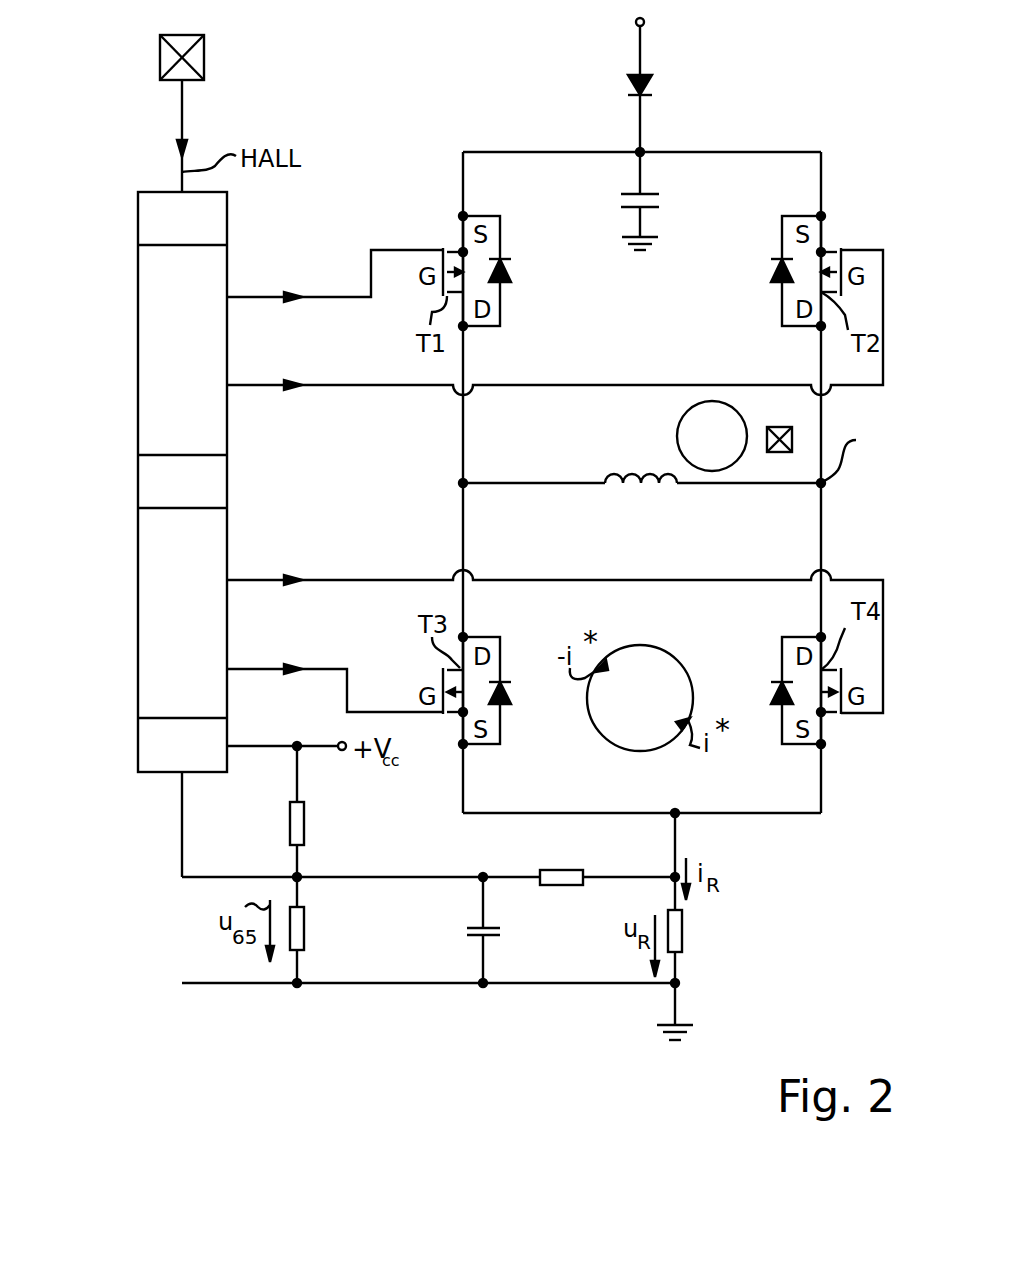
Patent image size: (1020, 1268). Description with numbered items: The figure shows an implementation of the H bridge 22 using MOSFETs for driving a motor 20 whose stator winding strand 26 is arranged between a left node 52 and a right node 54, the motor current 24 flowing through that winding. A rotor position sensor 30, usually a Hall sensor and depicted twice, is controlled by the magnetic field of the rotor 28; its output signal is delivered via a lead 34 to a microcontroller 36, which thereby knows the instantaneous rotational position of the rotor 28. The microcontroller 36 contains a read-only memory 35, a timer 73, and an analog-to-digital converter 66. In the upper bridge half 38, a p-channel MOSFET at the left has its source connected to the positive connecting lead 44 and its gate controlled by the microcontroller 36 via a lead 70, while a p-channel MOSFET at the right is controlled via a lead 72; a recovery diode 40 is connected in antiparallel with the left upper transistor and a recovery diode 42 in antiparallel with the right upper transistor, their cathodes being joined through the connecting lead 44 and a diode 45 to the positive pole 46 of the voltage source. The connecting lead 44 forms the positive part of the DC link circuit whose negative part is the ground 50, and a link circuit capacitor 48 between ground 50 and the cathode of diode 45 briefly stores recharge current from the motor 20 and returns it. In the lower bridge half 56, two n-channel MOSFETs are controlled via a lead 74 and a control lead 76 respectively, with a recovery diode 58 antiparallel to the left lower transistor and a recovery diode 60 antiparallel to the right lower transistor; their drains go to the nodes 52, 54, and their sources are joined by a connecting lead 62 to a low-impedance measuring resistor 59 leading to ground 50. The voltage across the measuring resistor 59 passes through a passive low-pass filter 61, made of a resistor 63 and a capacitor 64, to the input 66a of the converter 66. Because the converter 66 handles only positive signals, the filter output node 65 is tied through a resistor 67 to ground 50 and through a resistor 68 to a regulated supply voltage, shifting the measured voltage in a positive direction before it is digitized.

The motor 20 is at (552, 425).
The H bridge 22 is at (730, 140).
The motor current 24 is at (540, 473).
The stator winding strand 26 is at (616, 474).
The rotor 28 is at (684, 421).
The rotor position sensor 30 is at (204, 55).
The lead 34 is at (182, 122).
The ROM 35 is at (138, 217).
The microcontroller 36 is at (200, 393).
The upper bridge half 38 is at (603, 335).
The recovery diode 40 is at (512, 270).
The recovery diode 42 is at (778, 278).
The connecting lead 44 is at (517, 152).
The diode 45 is at (628, 82).
The positive pole 46 is at (636, 22).
The link circuit capacitor 48 is at (658, 205).
The ground 50 is at (668, 238).
The node 52 is at (463, 483).
The node 54 is at (821, 485).
The lower bridge half 56 is at (753, 795).
The recovery diode 58 is at (512, 700).
The measuring resistor 59 is at (683, 935).
The recovery diode 60 is at (770, 700).
The low-pass filter 61 is at (577, 965).
The connecting lead 62 is at (565, 813).
The resistor 63 is at (545, 885).
The capacitor 64 is at (478, 928).
The node 65 is at (297, 877).
The A/D converter 66 is at (138, 745).
The input 66a is at (182, 775).
The resistor 67 is at (304, 920).
The resistor 68 is at (304, 822).
The lead 70 is at (371, 262).
The lead 72 is at (652, 385).
The timer 73 is at (138, 483).
The lead 74 is at (305, 669).
The control lead 76 is at (640, 580).